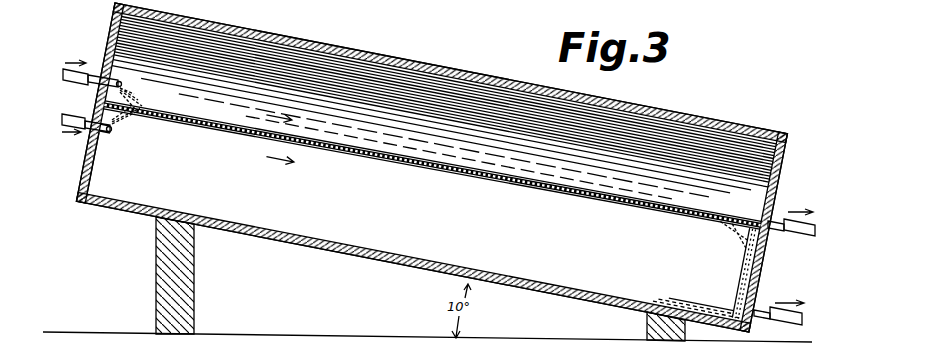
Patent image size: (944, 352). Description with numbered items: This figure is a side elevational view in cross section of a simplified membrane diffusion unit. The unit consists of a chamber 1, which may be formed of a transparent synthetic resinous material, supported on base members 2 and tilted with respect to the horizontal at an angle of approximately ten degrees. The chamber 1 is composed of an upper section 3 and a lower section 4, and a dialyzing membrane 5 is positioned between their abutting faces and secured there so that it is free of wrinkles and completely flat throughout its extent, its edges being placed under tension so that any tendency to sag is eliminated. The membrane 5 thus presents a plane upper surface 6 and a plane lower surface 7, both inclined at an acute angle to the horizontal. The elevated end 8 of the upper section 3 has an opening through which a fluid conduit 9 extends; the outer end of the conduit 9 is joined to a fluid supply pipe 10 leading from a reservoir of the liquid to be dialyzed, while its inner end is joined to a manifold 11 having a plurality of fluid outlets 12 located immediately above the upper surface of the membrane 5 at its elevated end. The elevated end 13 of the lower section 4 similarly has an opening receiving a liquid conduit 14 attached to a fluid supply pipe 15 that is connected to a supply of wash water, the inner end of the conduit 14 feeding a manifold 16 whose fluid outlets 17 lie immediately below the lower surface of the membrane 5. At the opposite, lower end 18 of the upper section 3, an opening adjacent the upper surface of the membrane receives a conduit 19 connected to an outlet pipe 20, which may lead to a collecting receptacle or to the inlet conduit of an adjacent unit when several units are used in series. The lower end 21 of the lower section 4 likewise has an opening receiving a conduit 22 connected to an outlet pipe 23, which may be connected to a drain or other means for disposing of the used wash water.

The chamber 1 is at (433, 63).
The base member 2 is at (200, 301).
The upper section 3 is at (356, 50).
The lower section 4 is at (308, 247).
The dialyzing membrane 5 is at (578, 200).
The upper surface 6 is at (445, 166).
The lower surface 7 is at (434, 173).
The elevated end 8 is at (112, 14).
The fluid conduit 9 is at (102, 74).
The fluid supply pipe 10 is at (68, 77).
The manifold 11 is at (121, 84).
The fluid outlets 12 is at (126, 92).
The elevated end 13 is at (82, 168).
The liquid conduit 14 is at (88, 118).
The fluid supply pipe 15 is at (64, 122).
The manifold 16 is at (112, 132).
The fluid outlets 17 is at (118, 128).
The lower end 18 is at (781, 171).
The conduit 19 is at (779, 220).
The outlet pipe 20 is at (800, 238).
The lower end 21 is at (763, 273).
The conduit 22 is at (768, 309).
The outlet pipe 23 is at (788, 325).